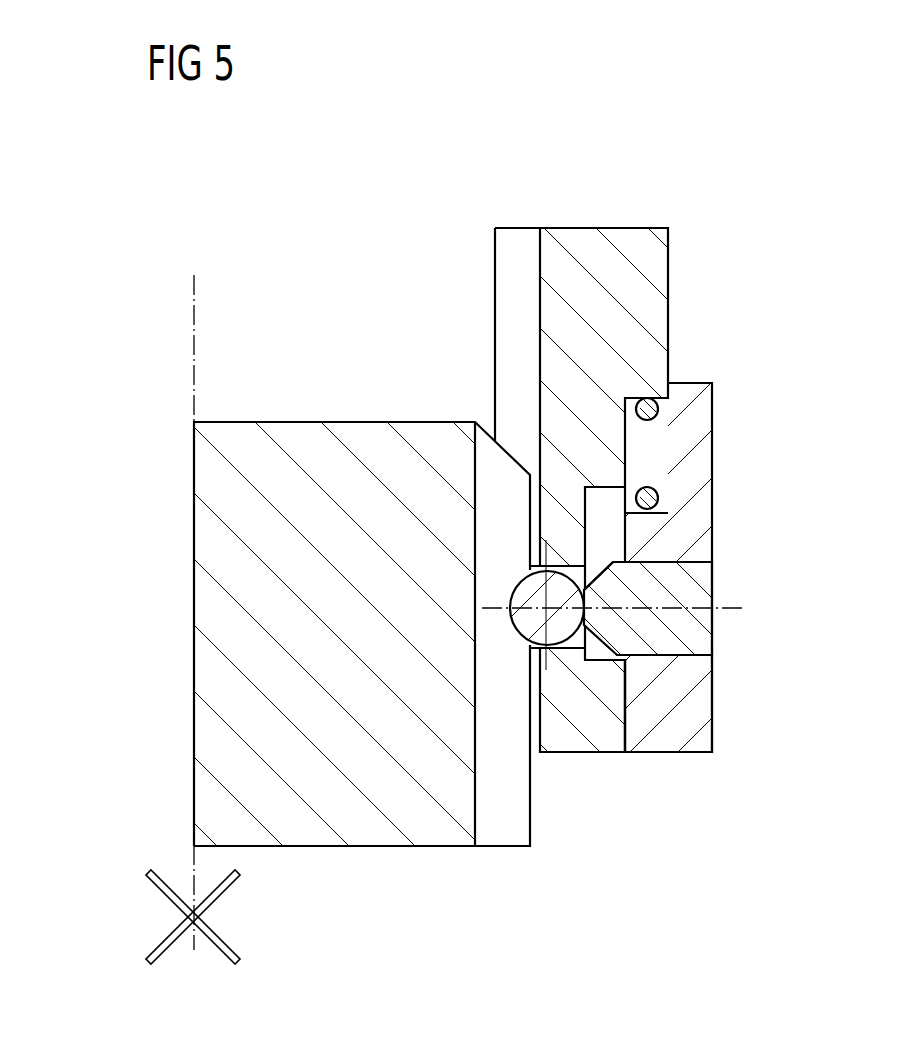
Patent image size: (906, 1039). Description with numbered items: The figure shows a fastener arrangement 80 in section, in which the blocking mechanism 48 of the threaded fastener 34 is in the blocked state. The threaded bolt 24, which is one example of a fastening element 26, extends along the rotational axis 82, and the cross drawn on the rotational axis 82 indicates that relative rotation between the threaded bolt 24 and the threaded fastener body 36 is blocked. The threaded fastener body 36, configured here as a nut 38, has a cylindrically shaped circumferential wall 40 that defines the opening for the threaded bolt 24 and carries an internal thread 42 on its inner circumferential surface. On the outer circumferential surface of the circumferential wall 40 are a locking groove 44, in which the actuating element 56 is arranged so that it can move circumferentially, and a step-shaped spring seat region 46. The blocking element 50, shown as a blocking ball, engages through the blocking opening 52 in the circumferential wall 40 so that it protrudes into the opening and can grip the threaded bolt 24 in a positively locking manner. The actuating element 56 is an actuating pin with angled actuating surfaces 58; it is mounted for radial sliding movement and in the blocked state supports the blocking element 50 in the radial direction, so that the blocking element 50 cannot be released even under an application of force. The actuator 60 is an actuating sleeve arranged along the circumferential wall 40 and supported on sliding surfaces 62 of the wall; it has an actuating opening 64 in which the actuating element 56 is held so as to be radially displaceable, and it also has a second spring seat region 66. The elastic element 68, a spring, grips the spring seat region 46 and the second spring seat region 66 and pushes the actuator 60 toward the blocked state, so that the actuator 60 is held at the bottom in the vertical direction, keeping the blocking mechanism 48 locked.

The threaded bolt 24 is at (438, 605).
The fastening element 26 is at (245, 432).
The threaded fastener 34 is at (530, 185).
The threaded fastener body 36 is at (465, 460).
The nut 38 is at (590, 227).
The circumferential wall 40 is at (552, 315).
The internal thread 42 is at (505, 375).
The locking groove 44 is at (605, 498).
The spring seat region 46 is at (645, 400).
The blocking mechanism 48 is at (694, 152).
The blocking element 50 is at (518, 620).
The blocking opening 52 is at (510, 592).
The actuating element 56 is at (705, 577).
The angled actuating surfaces 58 is at (590, 600).
The actuator 60 is at (700, 408).
The sliding surfaces 62 is at (622, 725).
The actuating opening 64 is at (700, 662).
The second spring seat region 66 is at (650, 518).
The elastic element 68 is at (645, 426).
The fastener arrangement 80 is at (550, 872).
The rotational axis 82 is at (187, 875).